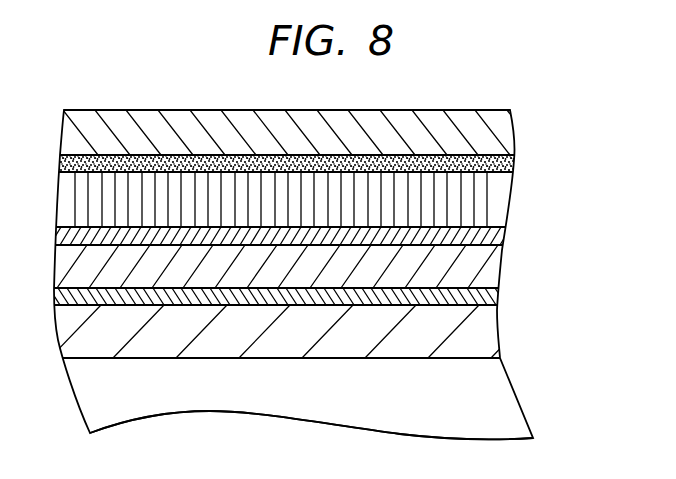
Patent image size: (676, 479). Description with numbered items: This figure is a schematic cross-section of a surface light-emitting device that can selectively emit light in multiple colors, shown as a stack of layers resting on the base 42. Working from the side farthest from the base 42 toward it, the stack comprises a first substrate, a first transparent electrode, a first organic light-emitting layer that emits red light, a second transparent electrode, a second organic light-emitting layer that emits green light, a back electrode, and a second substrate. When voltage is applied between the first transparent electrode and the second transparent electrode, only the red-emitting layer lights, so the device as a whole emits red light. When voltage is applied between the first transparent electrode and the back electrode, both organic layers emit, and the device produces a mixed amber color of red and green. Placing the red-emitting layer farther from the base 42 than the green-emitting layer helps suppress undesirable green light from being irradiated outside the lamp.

The base 42 is at (488, 392).